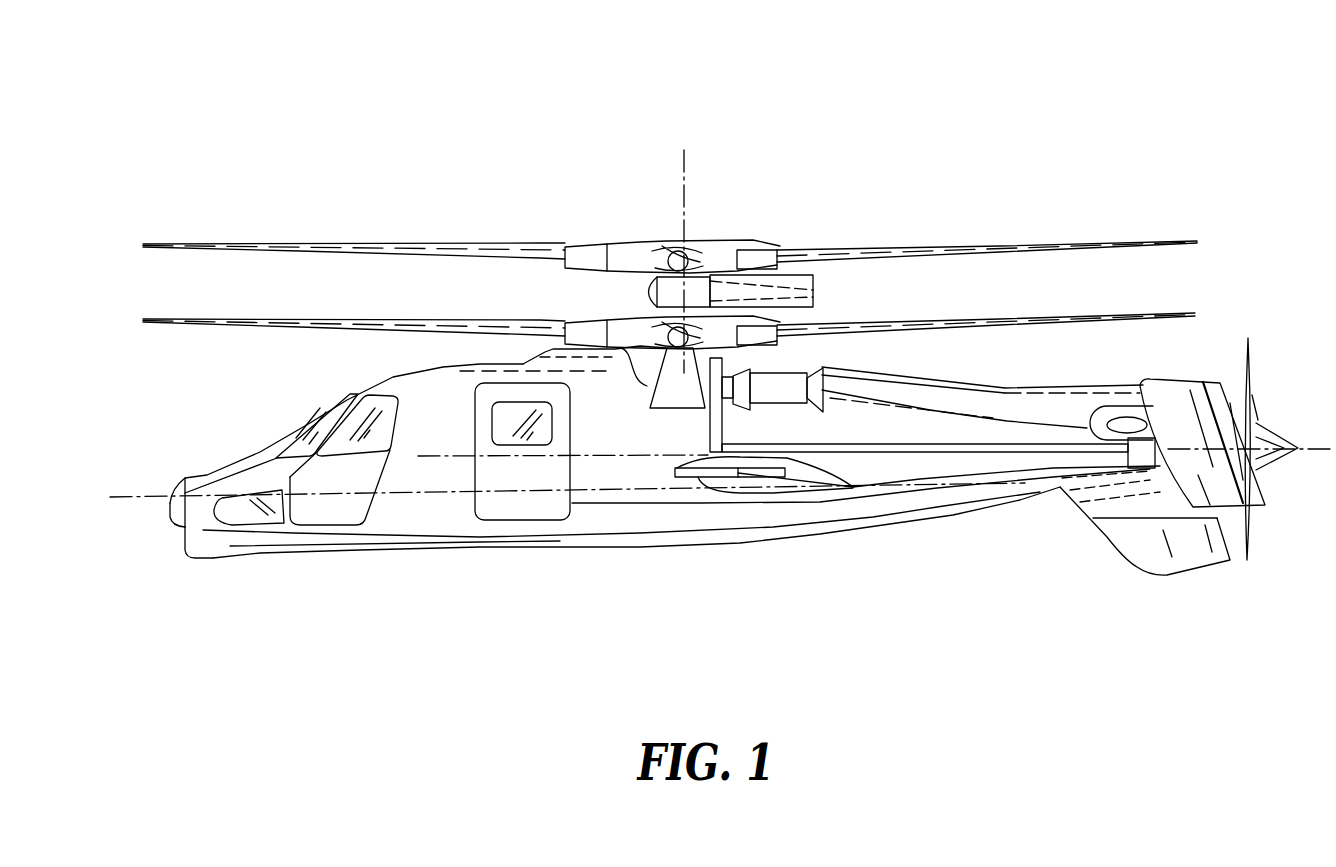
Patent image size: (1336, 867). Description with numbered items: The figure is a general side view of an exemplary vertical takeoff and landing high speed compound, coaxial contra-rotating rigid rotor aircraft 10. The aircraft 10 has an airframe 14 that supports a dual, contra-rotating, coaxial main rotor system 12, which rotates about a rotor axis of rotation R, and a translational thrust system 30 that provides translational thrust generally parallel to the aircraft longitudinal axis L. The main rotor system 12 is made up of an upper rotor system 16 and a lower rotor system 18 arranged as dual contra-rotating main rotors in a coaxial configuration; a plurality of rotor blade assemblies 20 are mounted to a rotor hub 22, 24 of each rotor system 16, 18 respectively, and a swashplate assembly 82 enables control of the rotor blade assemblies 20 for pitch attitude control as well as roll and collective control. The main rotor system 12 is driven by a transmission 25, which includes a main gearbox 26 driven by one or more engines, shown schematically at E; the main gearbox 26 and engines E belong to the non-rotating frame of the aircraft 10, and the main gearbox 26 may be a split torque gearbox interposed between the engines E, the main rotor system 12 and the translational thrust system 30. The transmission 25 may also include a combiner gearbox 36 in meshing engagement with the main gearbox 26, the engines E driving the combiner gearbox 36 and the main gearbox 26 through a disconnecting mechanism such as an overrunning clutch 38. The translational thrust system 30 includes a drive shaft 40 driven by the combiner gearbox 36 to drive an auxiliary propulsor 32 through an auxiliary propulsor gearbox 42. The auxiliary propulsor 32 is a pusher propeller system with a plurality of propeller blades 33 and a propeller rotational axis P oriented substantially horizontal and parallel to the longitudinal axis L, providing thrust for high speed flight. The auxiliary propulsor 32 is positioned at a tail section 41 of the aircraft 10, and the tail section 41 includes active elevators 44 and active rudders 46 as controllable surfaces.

The rotary wing aircraft 10 is at (295, 202).
The main rotor system 12 is at (753, 220).
The airframe 14 is at (196, 477).
The upper rotor system 16 is at (632, 243).
The lower rotor system 18 is at (628, 320).
The rotor blade assemblies 20 is at (1013, 247).
The rotor hub 22 is at (658, 240).
The rotor hub 24 is at (632, 318).
The transmission 25 is at (643, 437).
The main gearbox 26 is at (652, 408).
The translational thrust system 30 is at (1248, 327).
The auxiliary propulsor 32 is at (1250, 550).
The propeller blades 33 is at (1250, 360).
The combiner gearbox 36 is at (708, 417).
The overrunning clutch 38 is at (727, 400).
The drive shaft 40 is at (937, 445).
The tail section 41 is at (1112, 582).
The auxiliary propulsor gearbox 42 is at (1128, 460).
The active elevators 44 is at (1137, 420).
The active rudders 46 is at (1207, 498).
The swashplate assembly 82 is at (808, 300).
The rotor axis of rotation R is at (690, 170).
The engines E is at (793, 390).
The aircraft longitudinal axis L is at (922, 485).
The propeller rotational axis P is at (1312, 450).